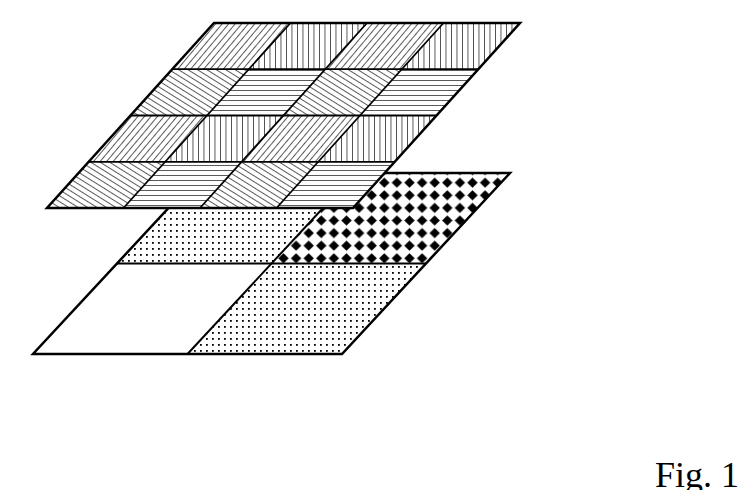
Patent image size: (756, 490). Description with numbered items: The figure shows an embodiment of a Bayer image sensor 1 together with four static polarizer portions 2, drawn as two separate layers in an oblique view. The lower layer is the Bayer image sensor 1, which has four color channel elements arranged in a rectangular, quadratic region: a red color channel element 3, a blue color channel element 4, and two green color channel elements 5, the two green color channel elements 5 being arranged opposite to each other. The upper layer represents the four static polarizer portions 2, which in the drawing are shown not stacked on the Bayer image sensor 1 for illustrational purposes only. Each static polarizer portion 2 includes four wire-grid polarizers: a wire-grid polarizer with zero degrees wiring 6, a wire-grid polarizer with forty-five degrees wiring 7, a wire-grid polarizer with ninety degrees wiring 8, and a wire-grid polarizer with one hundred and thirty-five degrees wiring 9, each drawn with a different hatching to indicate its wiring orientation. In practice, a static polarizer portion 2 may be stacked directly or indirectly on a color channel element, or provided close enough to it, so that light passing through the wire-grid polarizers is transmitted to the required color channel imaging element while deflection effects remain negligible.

The Bayer image sensor 1 is at (287, 265).
The static polarizer portion 2 is at (297, 139).
The red color channel element 3 is at (135, 355).
The blue color channel element 4 is at (483, 173).
The green color channel element 5 is at (285, 355).
The wire-grid polarizer with zero degrees wiring 6 is at (450, 100).
The wire-grid polarizer with forty-five degrees wiring 7 is at (497, 48).
The wire-grid polarizer with ninety degrees wiring 8 is at (108, 140).
The wire-grid polarizer with one hundred and thirty-five degrees wiring 9 is at (103, 208).